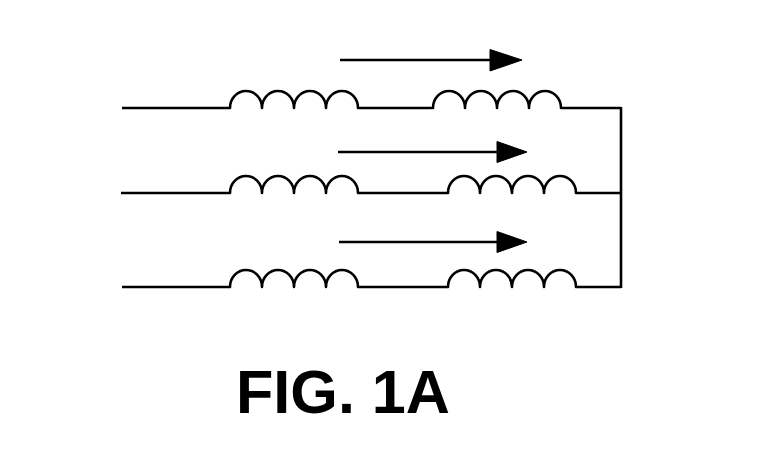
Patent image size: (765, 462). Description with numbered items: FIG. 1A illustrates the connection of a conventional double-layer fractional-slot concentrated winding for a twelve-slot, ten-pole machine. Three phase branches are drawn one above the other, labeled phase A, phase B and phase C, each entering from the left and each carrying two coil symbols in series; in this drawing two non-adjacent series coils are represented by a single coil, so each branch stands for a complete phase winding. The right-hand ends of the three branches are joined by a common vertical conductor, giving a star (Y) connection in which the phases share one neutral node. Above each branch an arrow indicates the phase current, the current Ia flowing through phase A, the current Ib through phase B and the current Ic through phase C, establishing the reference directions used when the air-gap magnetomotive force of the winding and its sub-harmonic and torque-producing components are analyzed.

The phase A winding A is at (342, 80).
The phase B winding B is at (343, 168).
The phase C winding C is at (342, 258).
The phase A current Ia is at (401, 51).
The phase B current Ib is at (404, 150).
The phase C current Ic is at (404, 236).